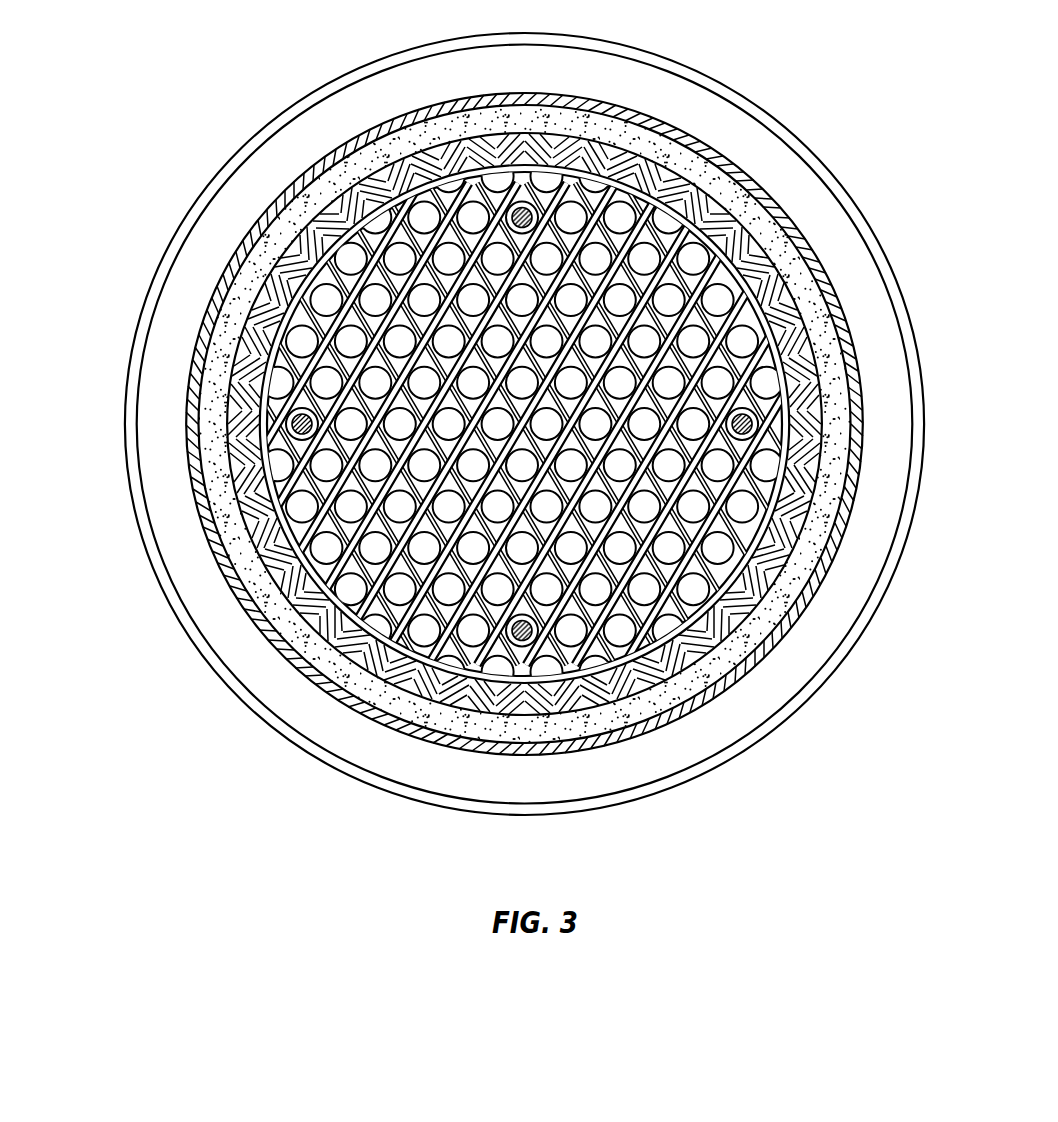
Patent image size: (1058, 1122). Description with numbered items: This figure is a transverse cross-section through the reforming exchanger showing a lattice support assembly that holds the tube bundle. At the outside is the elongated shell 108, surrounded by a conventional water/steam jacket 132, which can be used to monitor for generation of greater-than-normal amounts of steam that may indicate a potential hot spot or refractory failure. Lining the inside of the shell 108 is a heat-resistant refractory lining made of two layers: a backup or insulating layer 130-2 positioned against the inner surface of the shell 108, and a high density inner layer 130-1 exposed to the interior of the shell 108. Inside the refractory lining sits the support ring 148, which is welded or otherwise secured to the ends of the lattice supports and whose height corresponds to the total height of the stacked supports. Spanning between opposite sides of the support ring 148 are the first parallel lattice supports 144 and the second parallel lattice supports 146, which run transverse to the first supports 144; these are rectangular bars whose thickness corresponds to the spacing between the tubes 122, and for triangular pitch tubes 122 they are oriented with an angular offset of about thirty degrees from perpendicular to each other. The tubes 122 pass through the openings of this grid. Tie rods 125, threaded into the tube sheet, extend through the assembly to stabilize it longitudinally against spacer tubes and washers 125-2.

The water/steam jacket 132 is at (612, 42).
The insulating layer 130-2 is at (710, 157).
The high density inner layer 130-1 is at (773, 220).
The shell 108 is at (240, 240).
The first parallel lattice supports 144 is at (263, 348).
The support ring 148 is at (415, 680).
The tubes 122 is at (330, 540).
The second parallel lattice supports 146 is at (348, 509).
The tie rods 125 is at (397, 424).
The washers 125-2 is at (292, 434).